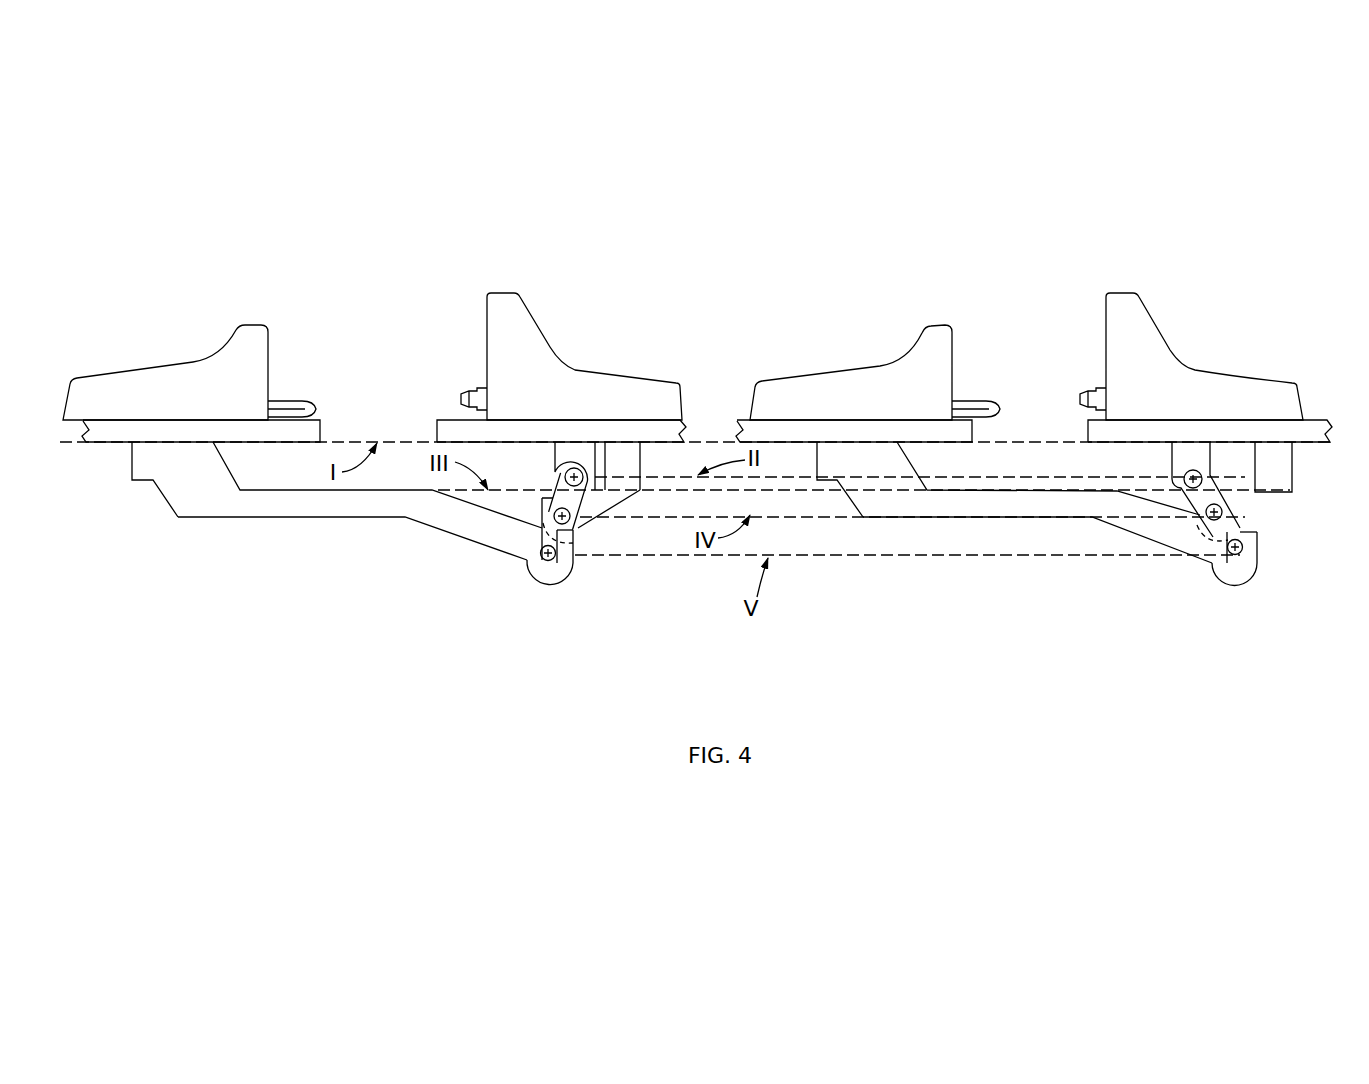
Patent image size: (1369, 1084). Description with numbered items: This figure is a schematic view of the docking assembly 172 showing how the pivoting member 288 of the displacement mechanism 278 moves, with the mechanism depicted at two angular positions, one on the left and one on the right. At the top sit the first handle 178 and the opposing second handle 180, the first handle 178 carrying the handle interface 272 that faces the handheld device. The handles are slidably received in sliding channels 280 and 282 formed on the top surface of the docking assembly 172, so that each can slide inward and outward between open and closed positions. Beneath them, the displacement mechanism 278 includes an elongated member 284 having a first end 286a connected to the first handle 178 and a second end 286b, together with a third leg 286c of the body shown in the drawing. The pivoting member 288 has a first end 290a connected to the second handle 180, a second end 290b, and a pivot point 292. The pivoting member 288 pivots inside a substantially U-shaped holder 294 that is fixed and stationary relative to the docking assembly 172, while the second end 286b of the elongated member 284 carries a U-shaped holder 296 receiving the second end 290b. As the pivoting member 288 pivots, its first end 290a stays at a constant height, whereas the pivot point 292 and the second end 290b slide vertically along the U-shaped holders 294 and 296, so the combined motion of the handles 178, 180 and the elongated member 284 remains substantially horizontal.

The docking assembly 172 is at (602, 267).
The first handle 178 is at (143, 362).
The second handle 180 is at (613, 360).
The handle interface 272 is at (310, 386).
The displacement mechanism 278 is at (210, 550).
The sliding channel 280 is at (122, 432).
The sliding channel 282 is at (441, 419).
The elongated member 284 is at (313, 520).
The first end of the elongated member 286a is at (845, 505).
The second end of the elongated member 286b is at (533, 583).
The third leg 286c is at (157, 502).
The pivoting member 288 is at (563, 487).
The first end of the pivoting member 290a is at (577, 473).
The second end of the pivoting member 290b is at (553, 557).
The pivot point 292 is at (548, 523).
The U-shaped holder 294 is at (577, 530).
The U-shaped holder 296 is at (552, 578).